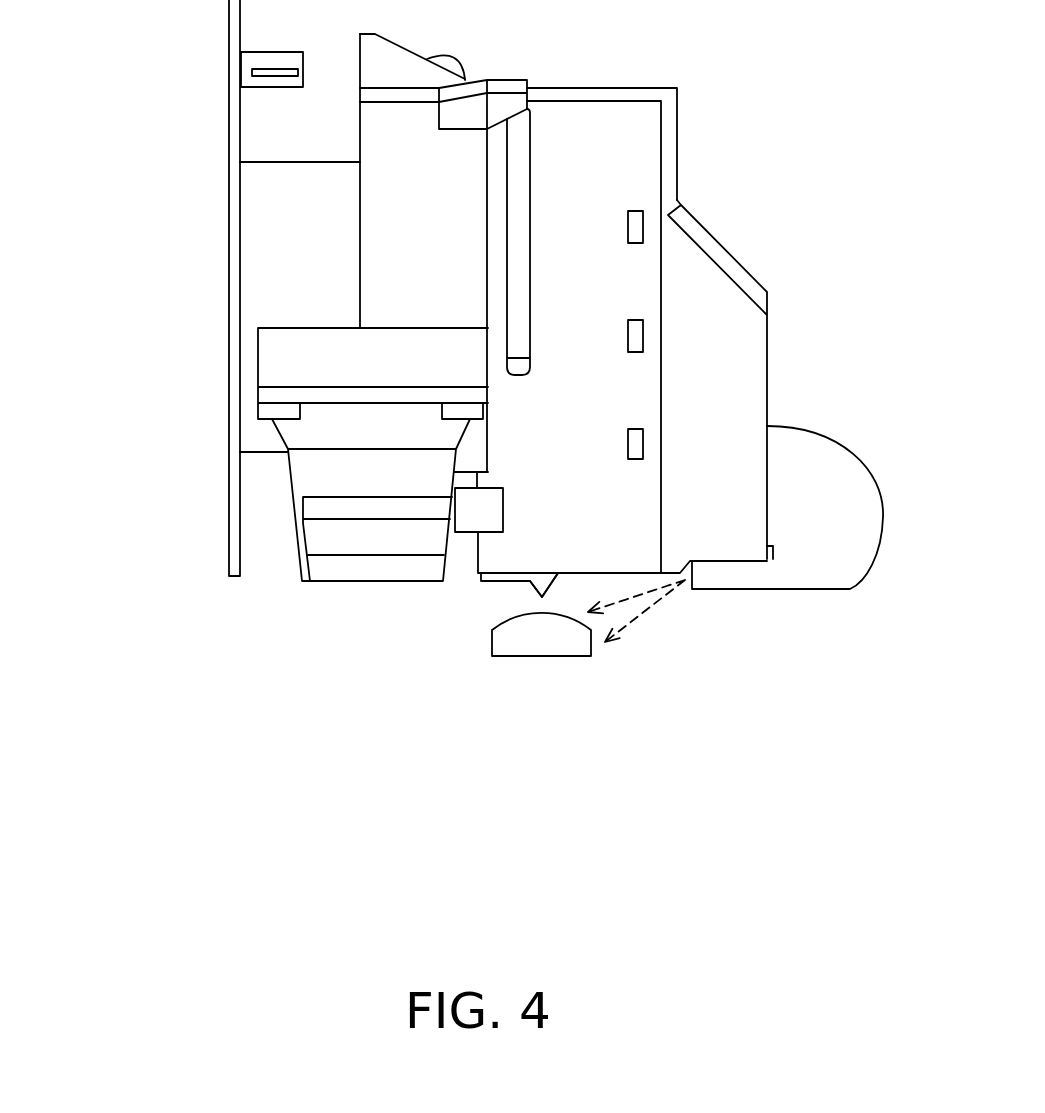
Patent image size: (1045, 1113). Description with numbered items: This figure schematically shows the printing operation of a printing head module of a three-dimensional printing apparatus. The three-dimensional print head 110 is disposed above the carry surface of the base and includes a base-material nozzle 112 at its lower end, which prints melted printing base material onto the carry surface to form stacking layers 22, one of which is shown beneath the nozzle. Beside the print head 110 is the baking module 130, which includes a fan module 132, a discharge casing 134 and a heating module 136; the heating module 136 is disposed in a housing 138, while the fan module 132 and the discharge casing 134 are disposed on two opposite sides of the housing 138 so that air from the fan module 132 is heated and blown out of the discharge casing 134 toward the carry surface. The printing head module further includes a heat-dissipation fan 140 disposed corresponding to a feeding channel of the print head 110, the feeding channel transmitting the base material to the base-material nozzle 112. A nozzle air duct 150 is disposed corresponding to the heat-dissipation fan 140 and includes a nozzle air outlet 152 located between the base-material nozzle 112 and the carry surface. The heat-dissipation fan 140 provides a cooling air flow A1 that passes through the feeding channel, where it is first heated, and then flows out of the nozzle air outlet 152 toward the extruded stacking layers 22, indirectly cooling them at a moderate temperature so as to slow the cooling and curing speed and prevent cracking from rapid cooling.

The 3-D print head 110 is at (605, 118).
The base-material nozzle 112 is at (542, 585).
The baking module 130 is at (96, 388).
The fan module 132 is at (273, 350).
The discharge casing 134 is at (322, 538).
The heating module 136 is at (284, 500).
The housing 138 is at (298, 473).
The heat-dissipation fan 140 is at (715, 257).
The nozzle air duct 150 is at (808, 490).
The nozzle air outlet 152 is at (682, 585).
The stacking layers 22 is at (548, 643).
The cooling air flow A1 is at (652, 615).